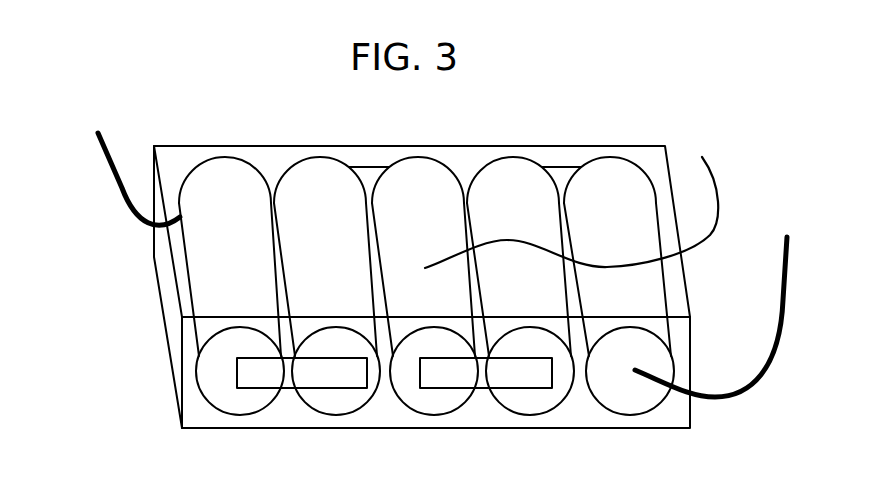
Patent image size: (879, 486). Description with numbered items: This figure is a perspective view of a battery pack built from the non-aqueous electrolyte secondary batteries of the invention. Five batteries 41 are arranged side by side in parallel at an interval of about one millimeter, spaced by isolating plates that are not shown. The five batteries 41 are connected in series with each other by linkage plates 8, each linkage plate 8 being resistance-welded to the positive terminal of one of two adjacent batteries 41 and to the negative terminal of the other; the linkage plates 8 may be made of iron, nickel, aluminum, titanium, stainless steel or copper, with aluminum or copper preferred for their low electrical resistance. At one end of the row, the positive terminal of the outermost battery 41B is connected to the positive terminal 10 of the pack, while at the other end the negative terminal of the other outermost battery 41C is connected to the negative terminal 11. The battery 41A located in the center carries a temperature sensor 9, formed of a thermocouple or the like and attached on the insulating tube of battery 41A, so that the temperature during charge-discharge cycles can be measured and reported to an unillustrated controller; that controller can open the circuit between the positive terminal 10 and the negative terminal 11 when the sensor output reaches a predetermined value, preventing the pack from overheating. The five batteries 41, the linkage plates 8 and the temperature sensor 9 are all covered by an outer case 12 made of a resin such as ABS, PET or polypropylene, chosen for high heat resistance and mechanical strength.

The linkage plate 8 is at (268, 373).
The temperature sensor 9 is at (710, 172).
The positive terminal 10 is at (110, 170).
The negative terminal 11 is at (740, 400).
The outer case 12 is at (390, 412).
The non-aqueous electrolyte secondary battery 41 is at (503, 168).
The battery arranged in the center 41A is at (402, 168).
The outermost battery 41B is at (215, 167).
The other outermost battery 41C is at (615, 172).